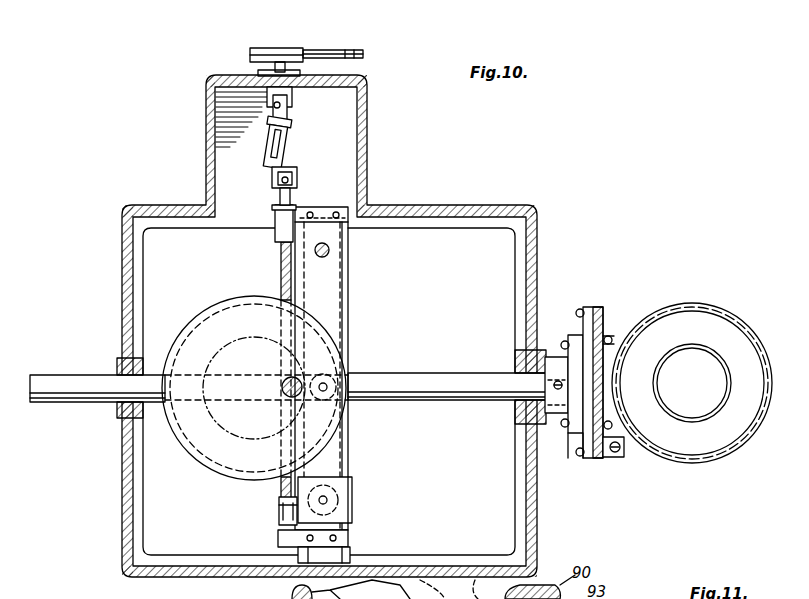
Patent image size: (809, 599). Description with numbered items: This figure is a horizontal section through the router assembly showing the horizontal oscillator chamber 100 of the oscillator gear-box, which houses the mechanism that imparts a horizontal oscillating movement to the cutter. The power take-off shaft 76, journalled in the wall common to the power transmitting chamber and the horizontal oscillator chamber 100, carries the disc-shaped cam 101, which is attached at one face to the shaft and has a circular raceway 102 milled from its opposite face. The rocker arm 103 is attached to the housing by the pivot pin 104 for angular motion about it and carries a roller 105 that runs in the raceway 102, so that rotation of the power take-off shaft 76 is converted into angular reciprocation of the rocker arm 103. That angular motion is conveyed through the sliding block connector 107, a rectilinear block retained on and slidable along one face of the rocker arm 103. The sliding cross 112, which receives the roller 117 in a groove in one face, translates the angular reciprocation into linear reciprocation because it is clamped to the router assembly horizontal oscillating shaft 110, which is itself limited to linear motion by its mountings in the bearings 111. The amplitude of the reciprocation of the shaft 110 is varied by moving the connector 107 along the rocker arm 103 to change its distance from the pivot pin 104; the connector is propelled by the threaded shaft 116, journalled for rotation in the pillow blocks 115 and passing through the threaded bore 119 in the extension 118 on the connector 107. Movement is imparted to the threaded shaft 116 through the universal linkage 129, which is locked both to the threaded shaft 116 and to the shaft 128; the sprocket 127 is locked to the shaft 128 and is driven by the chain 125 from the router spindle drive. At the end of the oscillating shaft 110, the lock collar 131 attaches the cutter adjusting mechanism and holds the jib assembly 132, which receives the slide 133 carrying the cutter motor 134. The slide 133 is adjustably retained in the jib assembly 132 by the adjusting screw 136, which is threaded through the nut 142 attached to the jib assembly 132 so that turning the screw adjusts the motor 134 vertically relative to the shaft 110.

The horizontal oscillator chamber 100 is at (432, 242).
The router assembly horizontal oscillating shaft 110 is at (78, 396).
The bearings 111 is at (115, 412).
The disc-shaped cam 101 is at (238, 297).
The circular raceway 102 is at (197, 342).
The power take-off shaft 76 is at (285, 395).
The rocker arm 103 is at (335, 282).
The sliding cross 112 is at (348, 312).
The pivot pin 104 is at (330, 250).
The roller 105 is at (337, 377).
The pillow blocks 115 is at (275, 233).
The threaded shaft 116 is at (281, 490).
The extension 118 is at (279, 515).
The threaded bore 119 is at (276, 508).
The sliding block connector 107 is at (352, 485).
The roller 117 is at (338, 500).
The universal linkage 129 is at (270, 136).
The sprocket 127 is at (265, 48).
The chain 125 is at (332, 49).
The shaft 128 is at (265, 70).
The lock collar 131 is at (556, 356).
The jib assembly 132 is at (590, 307).
The slide 133 is at (610, 335).
The adjusting screw 136 is at (610, 455).
The nut 142 is at (624, 452).
The motor 134 is at (728, 462).